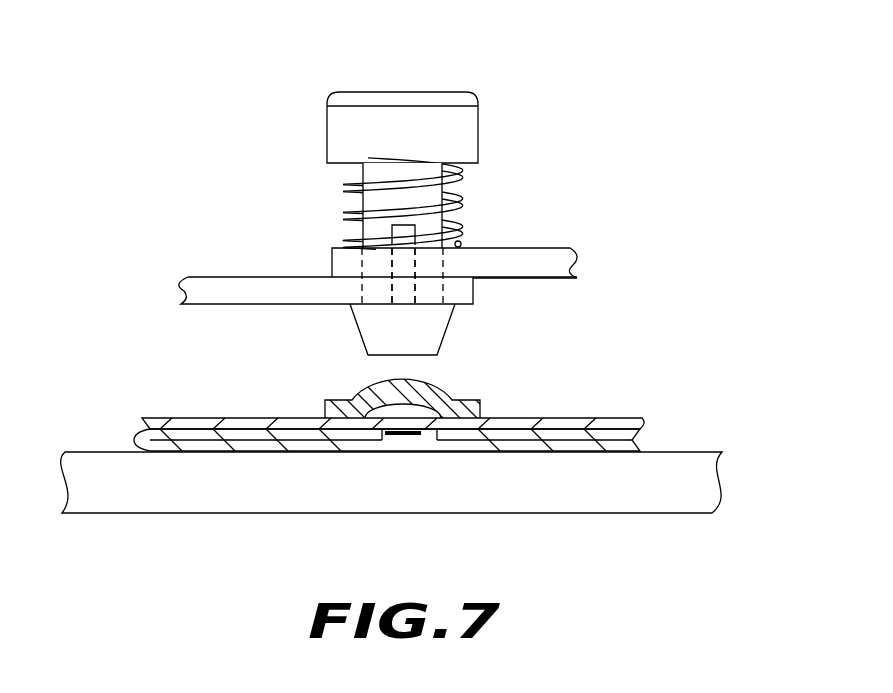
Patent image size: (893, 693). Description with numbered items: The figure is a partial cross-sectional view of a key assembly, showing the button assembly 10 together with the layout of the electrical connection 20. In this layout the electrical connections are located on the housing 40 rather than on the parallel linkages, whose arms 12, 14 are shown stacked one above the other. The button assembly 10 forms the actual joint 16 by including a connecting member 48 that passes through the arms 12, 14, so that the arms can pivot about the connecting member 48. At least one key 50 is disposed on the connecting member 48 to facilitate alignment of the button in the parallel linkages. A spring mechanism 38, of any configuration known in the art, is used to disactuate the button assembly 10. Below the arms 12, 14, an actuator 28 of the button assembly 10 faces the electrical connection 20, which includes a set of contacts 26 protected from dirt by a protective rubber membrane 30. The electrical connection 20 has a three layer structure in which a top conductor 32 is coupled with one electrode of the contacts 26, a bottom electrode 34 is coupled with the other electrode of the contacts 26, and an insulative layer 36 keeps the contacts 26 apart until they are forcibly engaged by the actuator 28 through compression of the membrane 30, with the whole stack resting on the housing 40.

The button assembly 10 is at (454, 77).
The arm of parallel linkage 12 is at (185, 277).
The arm of parallel linkage 14 is at (577, 248).
The joint 16 is at (493, 306).
The electrical connections 20 is at (728, 418).
The contacts 26 is at (422, 434).
The actuator 28 is at (357, 326).
The protective rubber membrane 30 is at (468, 400).
The top conductor 32 is at (200, 422).
The bottom electrode 34 is at (229, 447).
The insulative layer 36 is at (140, 437).
The spring mechanism 38 is at (466, 206).
The housing 40 is at (712, 516).
The connecting member 48 is at (443, 266).
The key 50 is at (403, 296).